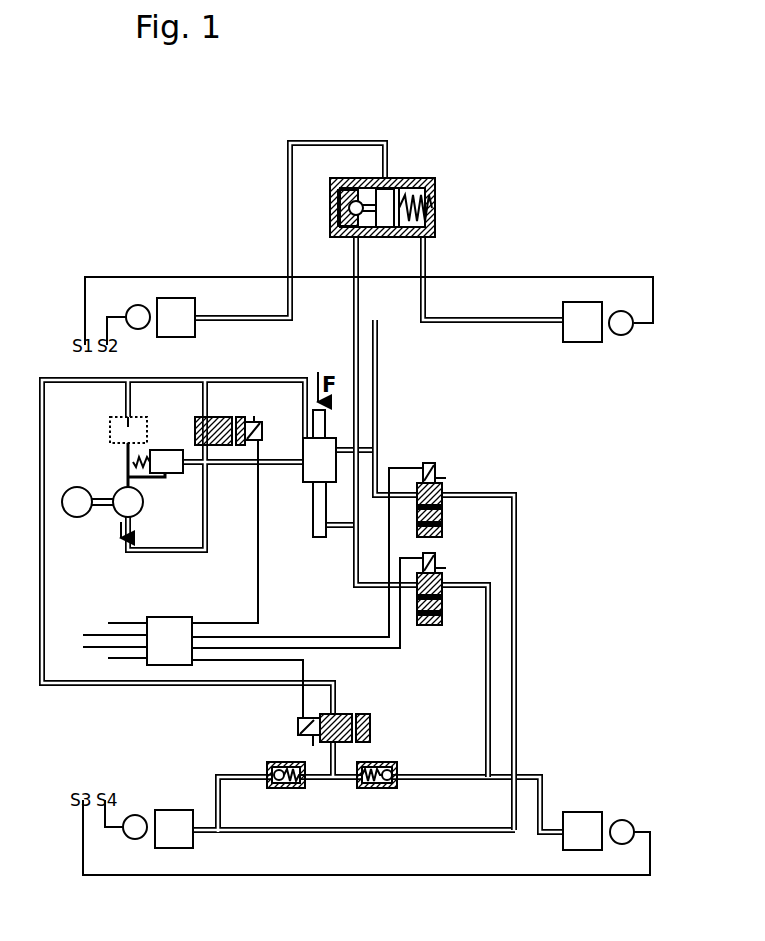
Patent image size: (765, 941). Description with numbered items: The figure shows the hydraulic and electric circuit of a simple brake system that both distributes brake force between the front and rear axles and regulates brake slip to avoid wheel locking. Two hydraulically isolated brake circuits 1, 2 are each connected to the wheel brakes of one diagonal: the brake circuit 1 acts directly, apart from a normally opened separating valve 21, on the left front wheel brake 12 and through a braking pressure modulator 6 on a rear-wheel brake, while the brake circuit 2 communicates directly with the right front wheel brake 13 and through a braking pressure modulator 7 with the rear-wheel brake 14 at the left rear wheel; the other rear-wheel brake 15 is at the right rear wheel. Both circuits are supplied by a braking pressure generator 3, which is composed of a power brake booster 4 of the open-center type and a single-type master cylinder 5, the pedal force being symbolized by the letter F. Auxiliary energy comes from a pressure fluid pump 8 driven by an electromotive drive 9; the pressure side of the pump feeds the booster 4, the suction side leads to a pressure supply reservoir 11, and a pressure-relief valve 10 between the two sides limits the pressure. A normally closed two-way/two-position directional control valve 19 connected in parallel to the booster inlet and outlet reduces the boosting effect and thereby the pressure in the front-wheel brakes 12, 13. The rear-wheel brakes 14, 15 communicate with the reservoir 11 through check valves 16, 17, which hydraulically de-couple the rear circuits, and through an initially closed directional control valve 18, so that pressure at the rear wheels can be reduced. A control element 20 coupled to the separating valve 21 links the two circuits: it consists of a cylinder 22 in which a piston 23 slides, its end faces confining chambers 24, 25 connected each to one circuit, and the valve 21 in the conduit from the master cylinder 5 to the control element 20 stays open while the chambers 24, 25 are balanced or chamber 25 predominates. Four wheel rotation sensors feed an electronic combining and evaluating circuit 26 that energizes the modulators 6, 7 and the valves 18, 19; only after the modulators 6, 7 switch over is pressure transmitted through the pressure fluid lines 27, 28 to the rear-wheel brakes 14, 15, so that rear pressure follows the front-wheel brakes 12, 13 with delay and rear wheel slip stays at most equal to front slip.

The brake circuit 1 is at (356, 398).
The brake circuit 2 is at (377, 398).
The braking pressure generator 3 is at (303, 441).
The power brake booster 4 is at (303, 480).
The master cylinder 5 is at (313, 526).
The braking pressure modulator 6 is at (442, 602).
The braking pressure modulator 7 is at (442, 512).
The pressure fluid pump 8 is at (120, 487).
The electromotive drive 9 is at (73, 487).
The pressure-relief valve 10 is at (170, 452).
The pressure supply reservoir 11 is at (110, 433).
The front-wheel brake 12 is at (176, 298).
The front-wheel brake 13 is at (582, 302).
The rear-wheel brake 14 is at (175, 848).
The rear-wheel brake 15 is at (583, 850).
The check valve 16 is at (285, 788).
The check valve 17 is at (373, 788).
The two-way/two-position directional control valve 18 is at (370, 727).
The two-way/two-position directional control valve 19 is at (226, 409).
The control element 20 is at (404, 209).
The separating valve 21 is at (350, 232).
The cylinder 22 is at (393, 188).
The piston 23 is at (400, 238).
The chamber 24 is at (368, 238).
The chamber 25 is at (436, 205).
The electronic combining and evaluating circuit 26 is at (178, 665).
The pressure fluid line 27 is at (486, 718).
The pressure fluid line 28 is at (517, 718).